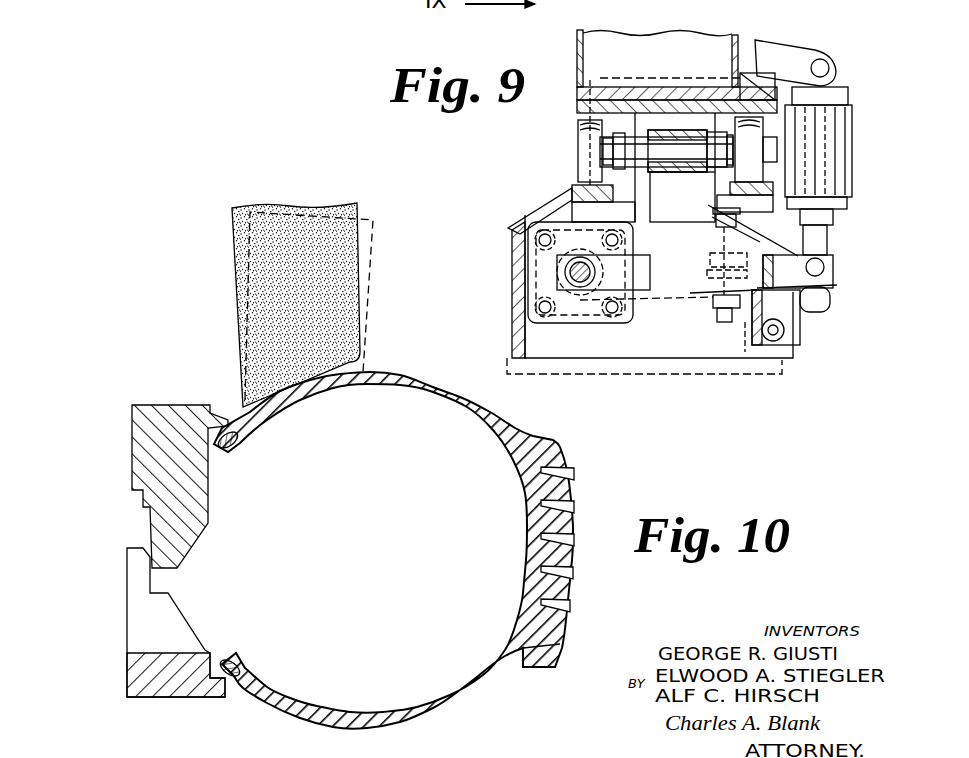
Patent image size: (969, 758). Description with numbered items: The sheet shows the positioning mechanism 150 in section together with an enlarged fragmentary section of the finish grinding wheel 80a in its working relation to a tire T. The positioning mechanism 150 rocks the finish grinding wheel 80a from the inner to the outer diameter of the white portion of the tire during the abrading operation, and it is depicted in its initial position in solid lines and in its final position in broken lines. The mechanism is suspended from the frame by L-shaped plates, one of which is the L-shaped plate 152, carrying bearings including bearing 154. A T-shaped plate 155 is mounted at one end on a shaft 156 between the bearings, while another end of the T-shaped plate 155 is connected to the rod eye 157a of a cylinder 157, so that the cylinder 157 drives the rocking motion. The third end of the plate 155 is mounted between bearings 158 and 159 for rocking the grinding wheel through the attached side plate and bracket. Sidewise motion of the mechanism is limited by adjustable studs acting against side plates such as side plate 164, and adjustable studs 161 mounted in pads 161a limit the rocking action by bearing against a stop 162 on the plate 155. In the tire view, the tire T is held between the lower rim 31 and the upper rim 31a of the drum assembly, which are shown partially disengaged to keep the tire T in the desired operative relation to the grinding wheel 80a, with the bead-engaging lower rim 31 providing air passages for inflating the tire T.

In FIG. 9, the positioning mechanism 150 is at (775, 32).
In FIG. 9, the L-shaped plate 152 is at (672, 117).
In FIG. 9, the bearing 154 is at (522, 262).
In FIG. 9, the T-shaped plate 155 is at (663, 287).
In FIG. 9, the shaft 156 is at (566, 276).
In FIG. 9, the cylinder 157 is at (840, 165).
In FIG. 9, the rod eye 157a is at (833, 272).
In FIG. 9, the bearing 158 is at (596, 128).
In FIG. 9, the bearing 159 is at (762, 131).
In FIG. 9, the adjustable stud 161 is at (715, 217).
In FIG. 9, the pad 161a is at (713, 305).
In FIG. 9, the stop 162 is at (707, 267).
In FIG. 9, the side plate 164 is at (577, 353).
In FIG. 10, the finish grinding wheel 80a is at (350, 313).
In FIG. 10, the lower rim 31 is at (178, 628).
In FIG. 10, the upper rim 31a is at (200, 497).
In FIG. 10, the tire T is at (563, 512).